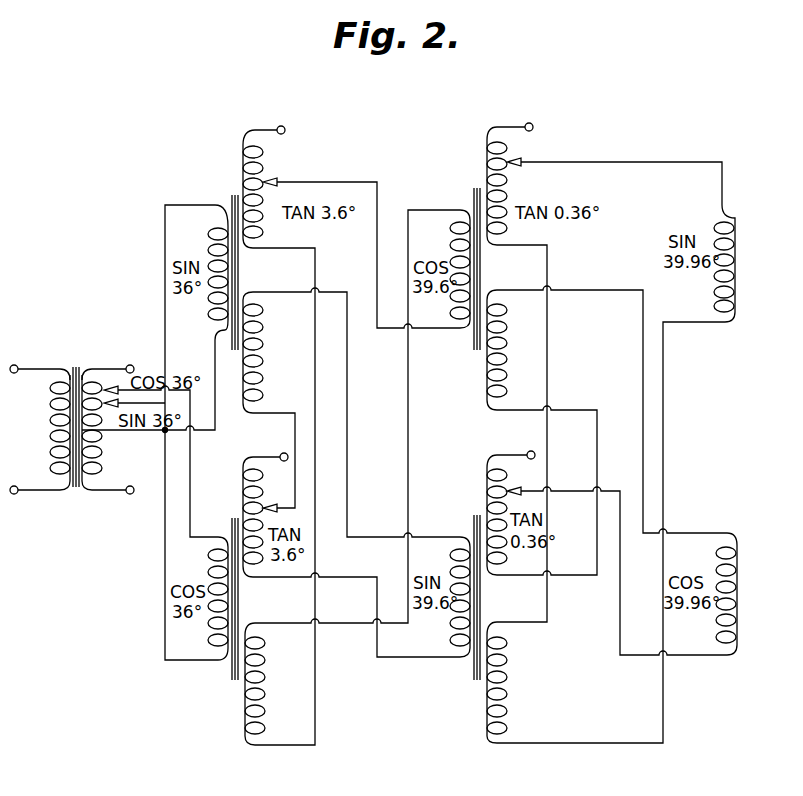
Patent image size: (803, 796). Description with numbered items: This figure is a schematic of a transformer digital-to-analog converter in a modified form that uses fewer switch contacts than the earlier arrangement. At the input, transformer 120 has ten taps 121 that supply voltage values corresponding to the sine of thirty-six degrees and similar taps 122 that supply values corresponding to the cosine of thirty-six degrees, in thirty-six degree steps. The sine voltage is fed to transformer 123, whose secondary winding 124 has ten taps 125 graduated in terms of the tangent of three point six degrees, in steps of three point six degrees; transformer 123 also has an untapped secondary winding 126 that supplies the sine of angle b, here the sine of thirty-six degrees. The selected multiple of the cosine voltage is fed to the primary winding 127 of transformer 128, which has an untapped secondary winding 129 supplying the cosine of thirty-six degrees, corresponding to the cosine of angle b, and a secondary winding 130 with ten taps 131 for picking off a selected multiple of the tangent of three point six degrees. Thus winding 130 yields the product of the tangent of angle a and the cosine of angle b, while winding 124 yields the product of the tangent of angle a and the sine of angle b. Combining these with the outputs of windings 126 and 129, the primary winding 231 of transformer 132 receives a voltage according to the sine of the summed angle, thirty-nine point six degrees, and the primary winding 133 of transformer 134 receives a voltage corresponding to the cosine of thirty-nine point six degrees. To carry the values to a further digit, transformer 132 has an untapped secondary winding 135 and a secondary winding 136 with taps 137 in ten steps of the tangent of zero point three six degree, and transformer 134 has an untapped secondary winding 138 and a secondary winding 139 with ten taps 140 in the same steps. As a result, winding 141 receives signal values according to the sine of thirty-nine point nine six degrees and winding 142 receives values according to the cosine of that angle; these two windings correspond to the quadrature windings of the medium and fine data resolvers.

The transformer 120 is at (75, 370).
The taps 121 is at (113, 407).
The taps 122 is at (112, 386).
The transformer 123 is at (233, 195).
The secondary winding 124 is at (243, 142).
The taps 125 is at (272, 182).
The secondary winding 126 is at (262, 330).
The primary winding 127 is at (210, 641).
The transformer 128 is at (235, 680).
The secondary winding 129 is at (245, 736).
The secondary winding 130 is at (252, 457).
The taps 131 is at (272, 507).
The transformer 132 is at (477, 680).
The primary winding 133 is at (452, 228).
The transformer 134 is at (477, 188).
The secondary winding 135 is at (508, 691).
The secondary winding 136 is at (487, 479).
The taps 137 is at (523, 481).
The secondary winding 138 is at (505, 360).
The secondary winding 139 is at (508, 195).
The taps 140 is at (519, 162).
The winding 141 is at (735, 213).
The winding 142 is at (738, 553).
The primary winding 231 is at (455, 636).